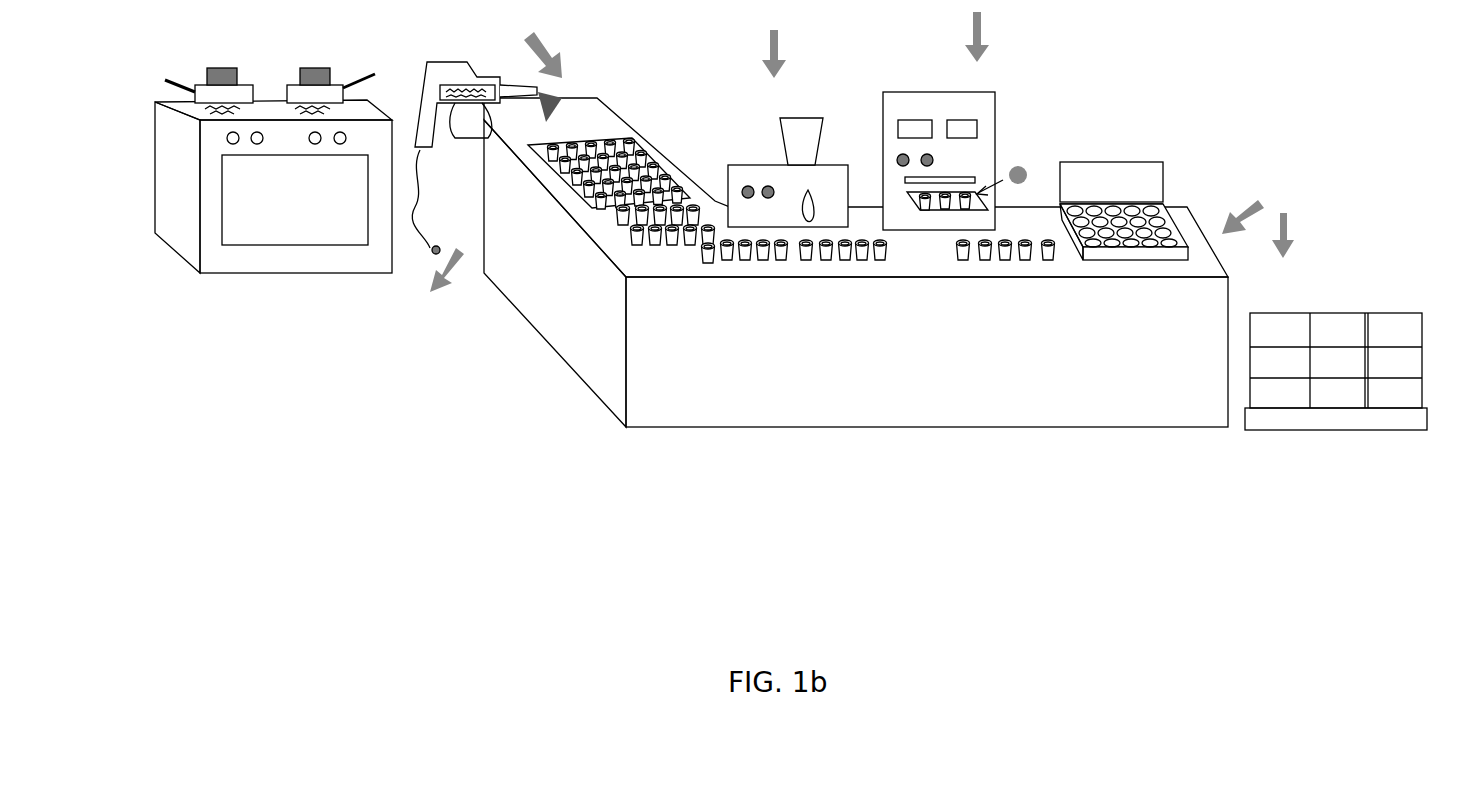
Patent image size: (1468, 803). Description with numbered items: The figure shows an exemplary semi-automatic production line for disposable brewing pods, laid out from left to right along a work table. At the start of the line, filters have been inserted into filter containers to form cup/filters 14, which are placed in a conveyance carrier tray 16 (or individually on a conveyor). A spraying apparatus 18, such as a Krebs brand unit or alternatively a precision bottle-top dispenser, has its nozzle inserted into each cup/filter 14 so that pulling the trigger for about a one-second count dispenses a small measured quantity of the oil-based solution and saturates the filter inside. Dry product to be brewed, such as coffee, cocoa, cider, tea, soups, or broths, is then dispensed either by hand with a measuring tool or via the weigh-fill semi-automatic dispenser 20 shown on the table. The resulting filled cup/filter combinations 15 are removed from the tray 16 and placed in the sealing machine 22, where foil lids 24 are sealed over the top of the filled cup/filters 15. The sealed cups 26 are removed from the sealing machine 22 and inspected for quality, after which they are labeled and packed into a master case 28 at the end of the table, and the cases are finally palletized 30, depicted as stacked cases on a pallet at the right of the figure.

The cup/filter 14 is at (663, 143).
The filled cup/filter combination 15 is at (831, 284).
The conveyance carrier tray 16 is at (615, 174).
The spraying apparatus 18 is at (455, 58).
The weigh-fill semi-automatic dispenser 20 is at (752, 165).
The sealing machine 22 is at (912, 92).
The foil lids 24 is at (1015, 165).
The sealed cups 26 is at (990, 282).
The master case 28 is at (1122, 263).
The palletized 30 is at (1282, 422).